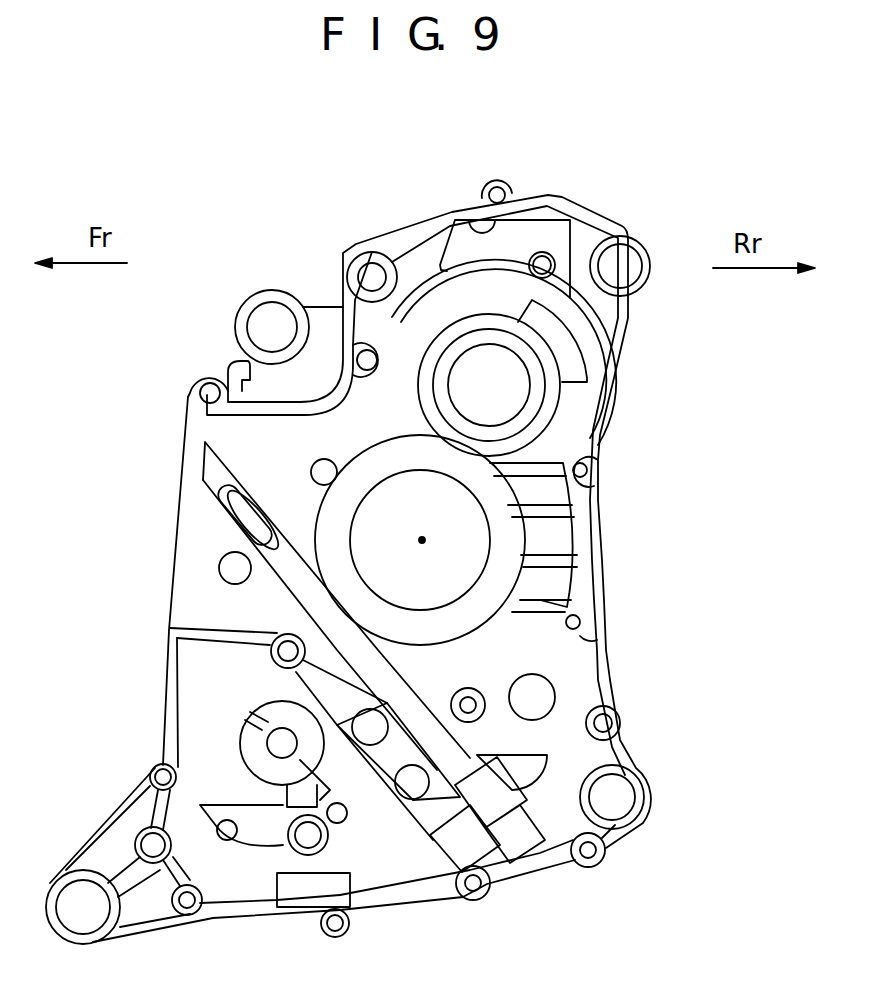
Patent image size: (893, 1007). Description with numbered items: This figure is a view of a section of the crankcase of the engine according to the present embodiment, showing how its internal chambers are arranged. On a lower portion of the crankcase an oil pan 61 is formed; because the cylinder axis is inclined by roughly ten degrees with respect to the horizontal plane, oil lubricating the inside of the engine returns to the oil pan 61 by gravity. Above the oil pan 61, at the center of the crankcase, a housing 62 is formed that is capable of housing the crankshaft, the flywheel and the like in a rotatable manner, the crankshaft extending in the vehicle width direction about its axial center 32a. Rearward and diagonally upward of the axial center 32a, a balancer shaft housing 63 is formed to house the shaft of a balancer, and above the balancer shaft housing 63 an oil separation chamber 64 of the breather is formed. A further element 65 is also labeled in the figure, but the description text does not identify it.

The oil pan 61 is at (560, 810).
The housing 62 is at (447, 573).
The balancer shaft housing 63 is at (517, 400).
The oil separation chamber 64 is at (610, 325).
The boss 65 is at (232, 330).
The axial center of the crankshaft 32a is at (422, 540).